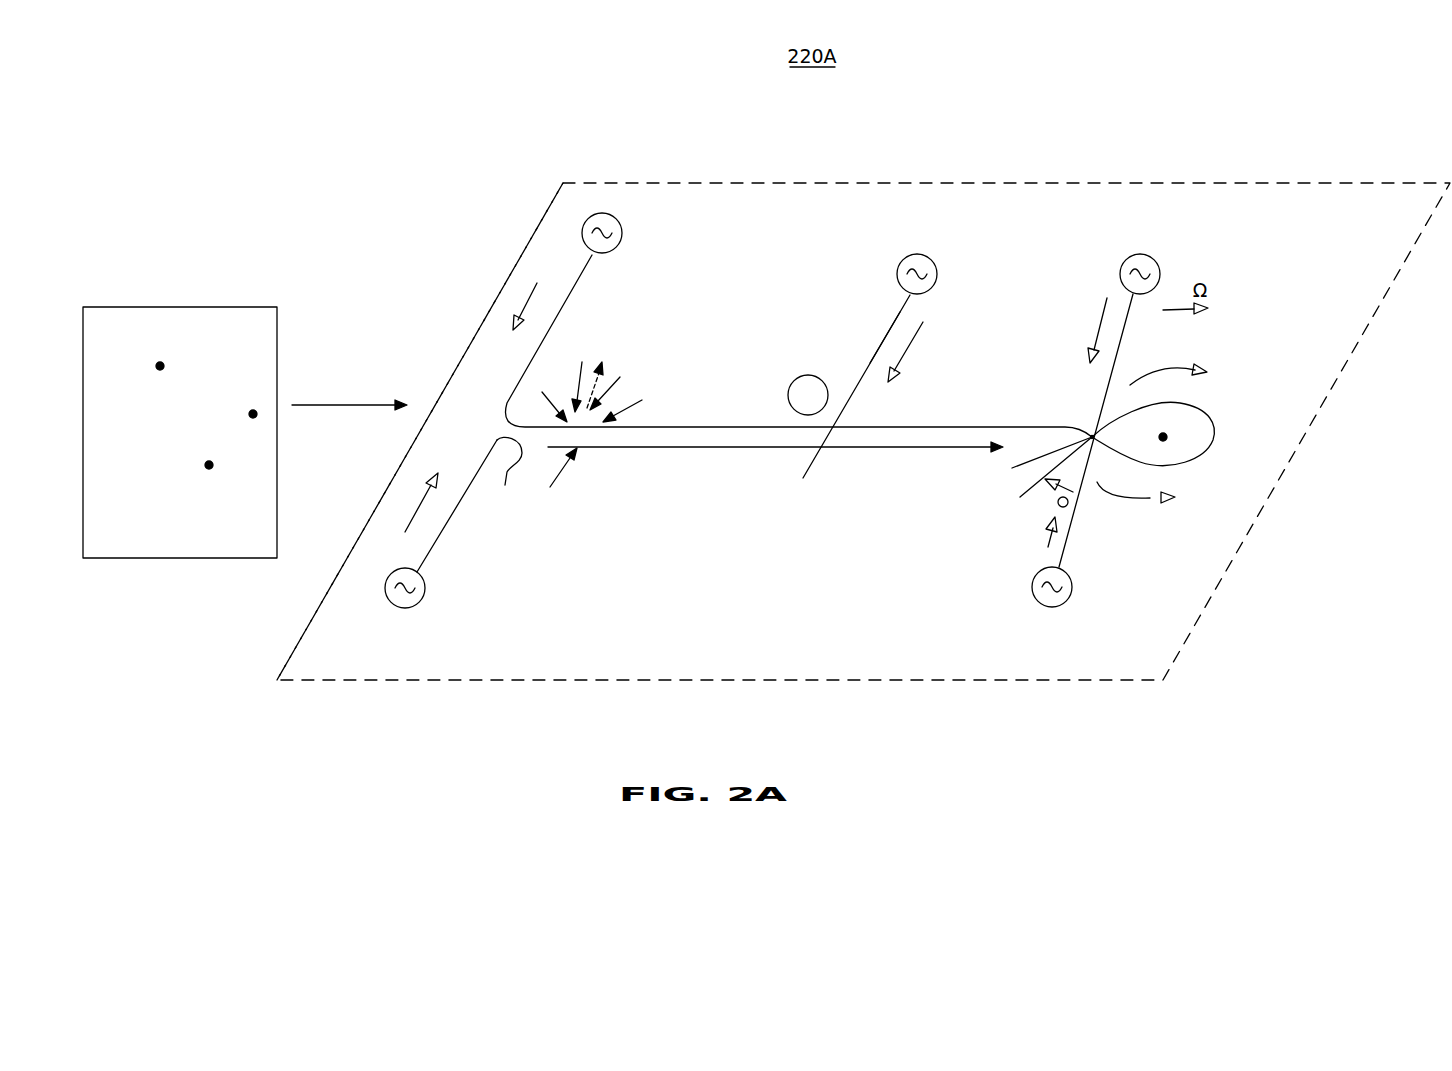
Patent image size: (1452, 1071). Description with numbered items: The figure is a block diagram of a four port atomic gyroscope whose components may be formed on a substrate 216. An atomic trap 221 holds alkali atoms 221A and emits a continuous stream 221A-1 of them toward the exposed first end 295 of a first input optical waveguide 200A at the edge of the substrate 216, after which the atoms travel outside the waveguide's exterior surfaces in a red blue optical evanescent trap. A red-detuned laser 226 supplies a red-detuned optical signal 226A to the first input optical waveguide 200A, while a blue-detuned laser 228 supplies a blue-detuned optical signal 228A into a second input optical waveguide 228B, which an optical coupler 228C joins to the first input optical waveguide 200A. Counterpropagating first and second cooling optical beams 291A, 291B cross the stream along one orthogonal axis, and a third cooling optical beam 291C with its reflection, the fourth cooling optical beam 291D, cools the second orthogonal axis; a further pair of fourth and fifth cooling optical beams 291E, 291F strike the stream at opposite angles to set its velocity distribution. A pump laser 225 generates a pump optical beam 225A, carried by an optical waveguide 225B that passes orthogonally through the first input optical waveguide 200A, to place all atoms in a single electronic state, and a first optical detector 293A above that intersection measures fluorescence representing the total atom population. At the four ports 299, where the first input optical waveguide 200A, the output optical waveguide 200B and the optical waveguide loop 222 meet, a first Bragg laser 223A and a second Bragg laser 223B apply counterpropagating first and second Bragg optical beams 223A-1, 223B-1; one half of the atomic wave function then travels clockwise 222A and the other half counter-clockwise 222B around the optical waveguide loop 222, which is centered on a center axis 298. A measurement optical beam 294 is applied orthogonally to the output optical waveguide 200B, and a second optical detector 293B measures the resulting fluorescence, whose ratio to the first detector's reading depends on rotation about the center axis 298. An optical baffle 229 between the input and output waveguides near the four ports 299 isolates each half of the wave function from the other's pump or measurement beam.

The substrate 216 is at (764, 183).
The first end of the first input optical waveguide 295 is at (440, 398).
The atomic trap 221 is at (175, 307).
The alkali atoms 221A is at (157, 366).
The stream of alkali atoms 221A-1 is at (375, 405).
The first input optical waveguide 200A is at (698, 427).
The red-detuned laser 226 is at (622, 237).
The red-detuned optical signal 226A is at (515, 300).
The blue-detuned laser 228 is at (402, 607).
The blue-detuned optical signal 228A is at (405, 522).
The second input optical waveguide 228B is at (457, 507).
The optical coupler 228C is at (503, 474).
The pump laser 225 is at (937, 273).
The pump optical beam 225A is at (905, 343).
The optical waveguide for the pump beam 225B is at (878, 347).
The first optical detector 293A is at (797, 380).
The second optical detector 293B is at (1070, 506).
The first Bragg laser 223A is at (1160, 273).
The first Bragg optical beam 223A-1 is at (1097, 328).
The second Bragg laser 223B is at (1073, 592).
The second Bragg optical beam 223B-1 is at (1048, 545).
The measurement optical beam 294 is at (1045, 484).
The four ports 299 is at (1088, 433).
The optical waveguide loop 222 is at (1218, 428).
The clockwise direction 222A is at (1165, 365).
The counter-clockwise direction 222B is at (1108, 500).
The center axis 298 is at (1163, 437).
The optical baffle 229 is at (1018, 466).
The output optical waveguide 200B is at (1028, 477).
The first cooling optical beam 291A is at (558, 472).
The second cooling optical beam 291B is at (622, 378).
The third cooling optical beam 291C is at (580, 377).
The fourth cooling optical beam 291D is at (603, 378).
The fourth cooling optical beam 291E is at (548, 393).
The fifth cooling optical beam 291F is at (632, 405).